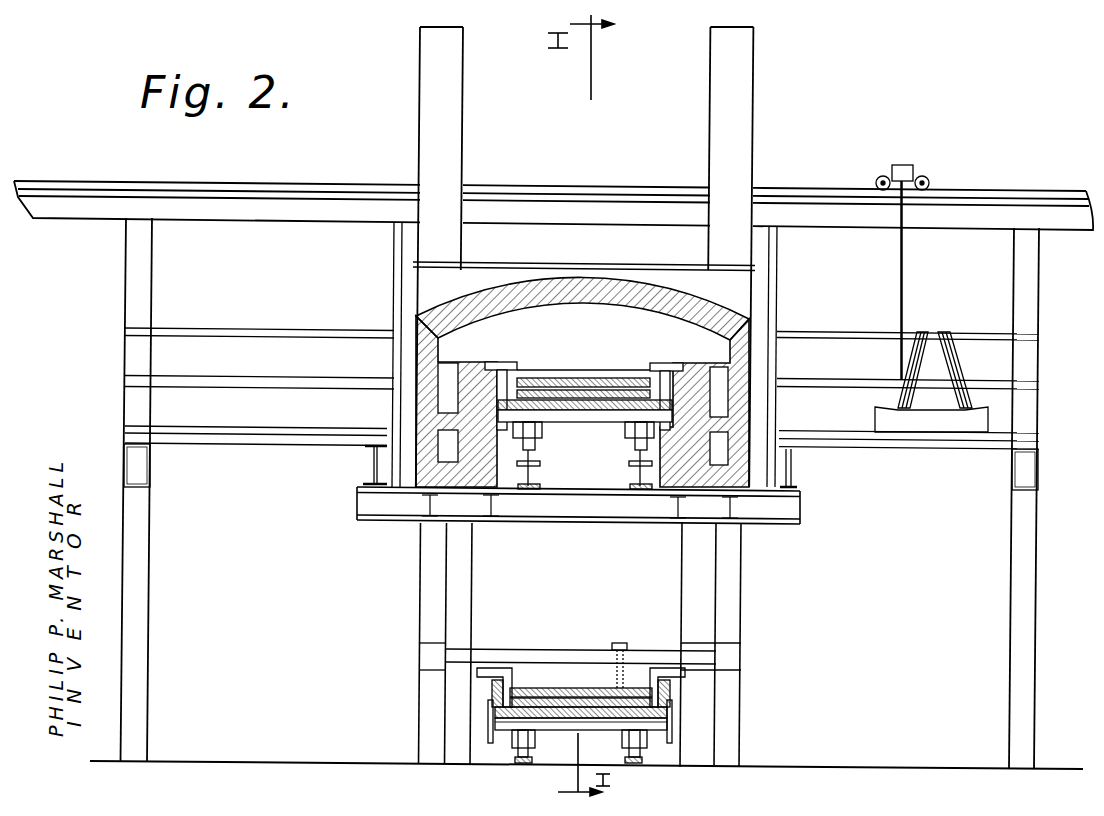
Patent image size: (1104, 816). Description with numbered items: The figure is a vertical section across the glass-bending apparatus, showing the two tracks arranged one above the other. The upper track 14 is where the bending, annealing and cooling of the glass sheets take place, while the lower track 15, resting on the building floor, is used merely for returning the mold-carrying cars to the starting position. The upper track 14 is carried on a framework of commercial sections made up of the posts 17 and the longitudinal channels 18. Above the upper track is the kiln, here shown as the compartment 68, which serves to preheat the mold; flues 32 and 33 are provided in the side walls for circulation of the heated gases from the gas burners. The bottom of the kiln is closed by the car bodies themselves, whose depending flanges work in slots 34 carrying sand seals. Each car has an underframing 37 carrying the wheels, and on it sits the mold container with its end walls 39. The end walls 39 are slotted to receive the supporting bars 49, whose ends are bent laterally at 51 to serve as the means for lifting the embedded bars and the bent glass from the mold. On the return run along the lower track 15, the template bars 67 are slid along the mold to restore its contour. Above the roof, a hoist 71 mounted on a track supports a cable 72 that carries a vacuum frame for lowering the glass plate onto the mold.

The upper track 14 is at (637, 452).
The lower track 15 is at (528, 760).
The posts 17 is at (420, 587).
The longitudinal channels 18 is at (421, 505).
The flue 32 is at (452, 387).
The flue 33 is at (448, 445).
The slots 34 is at (511, 447).
The underframing 37 is at (595, 414).
The end walls 39 is at (490, 700).
The supporting bar 49 is at (641, 372).
The laterally bent ends 51 is at (497, 368).
The bars 67 is at (535, 652).
The compartment 68 is at (608, 338).
The hoist 71 is at (906, 170).
The cable 72 is at (903, 267).